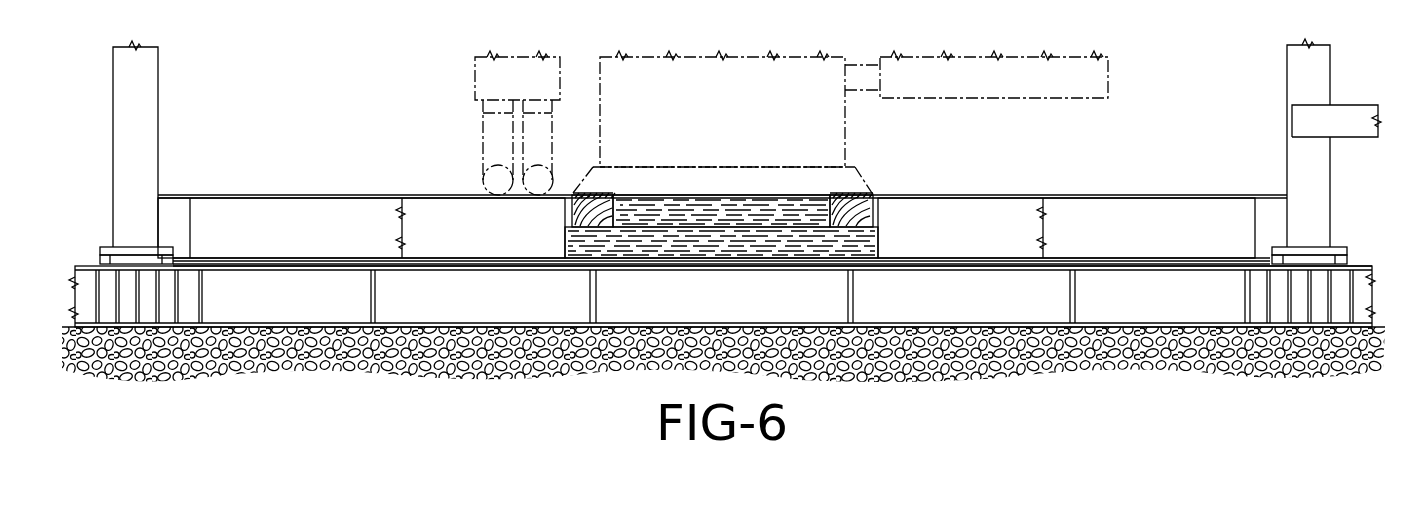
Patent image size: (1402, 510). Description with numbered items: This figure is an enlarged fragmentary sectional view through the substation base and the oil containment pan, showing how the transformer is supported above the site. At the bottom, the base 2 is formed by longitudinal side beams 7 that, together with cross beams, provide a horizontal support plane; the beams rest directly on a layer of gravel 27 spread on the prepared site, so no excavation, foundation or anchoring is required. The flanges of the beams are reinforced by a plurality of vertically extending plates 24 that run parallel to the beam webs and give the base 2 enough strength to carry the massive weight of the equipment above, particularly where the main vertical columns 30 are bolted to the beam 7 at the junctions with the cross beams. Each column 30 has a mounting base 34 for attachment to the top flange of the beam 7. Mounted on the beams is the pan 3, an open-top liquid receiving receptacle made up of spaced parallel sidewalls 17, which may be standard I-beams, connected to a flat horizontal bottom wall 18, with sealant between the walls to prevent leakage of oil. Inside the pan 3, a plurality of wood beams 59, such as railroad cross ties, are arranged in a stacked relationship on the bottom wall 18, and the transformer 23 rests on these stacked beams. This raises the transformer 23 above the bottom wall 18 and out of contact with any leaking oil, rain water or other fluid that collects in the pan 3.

The base 2 is at (993, 260).
The pan 3 is at (258, 192).
The longitudinal side beam 7 is at (297, 280).
The sidewall 17 is at (330, 200).
The base (bottom wall) 18 is at (448, 262).
The transformer 23 is at (845, 108).
The vertically extending plate 24 is at (202, 298).
The gravel 27 is at (500, 327).
The main vertical column 30 is at (150, 82).
The mounting base 34 is at (1337, 248).
The wood beam 59 is at (677, 200).